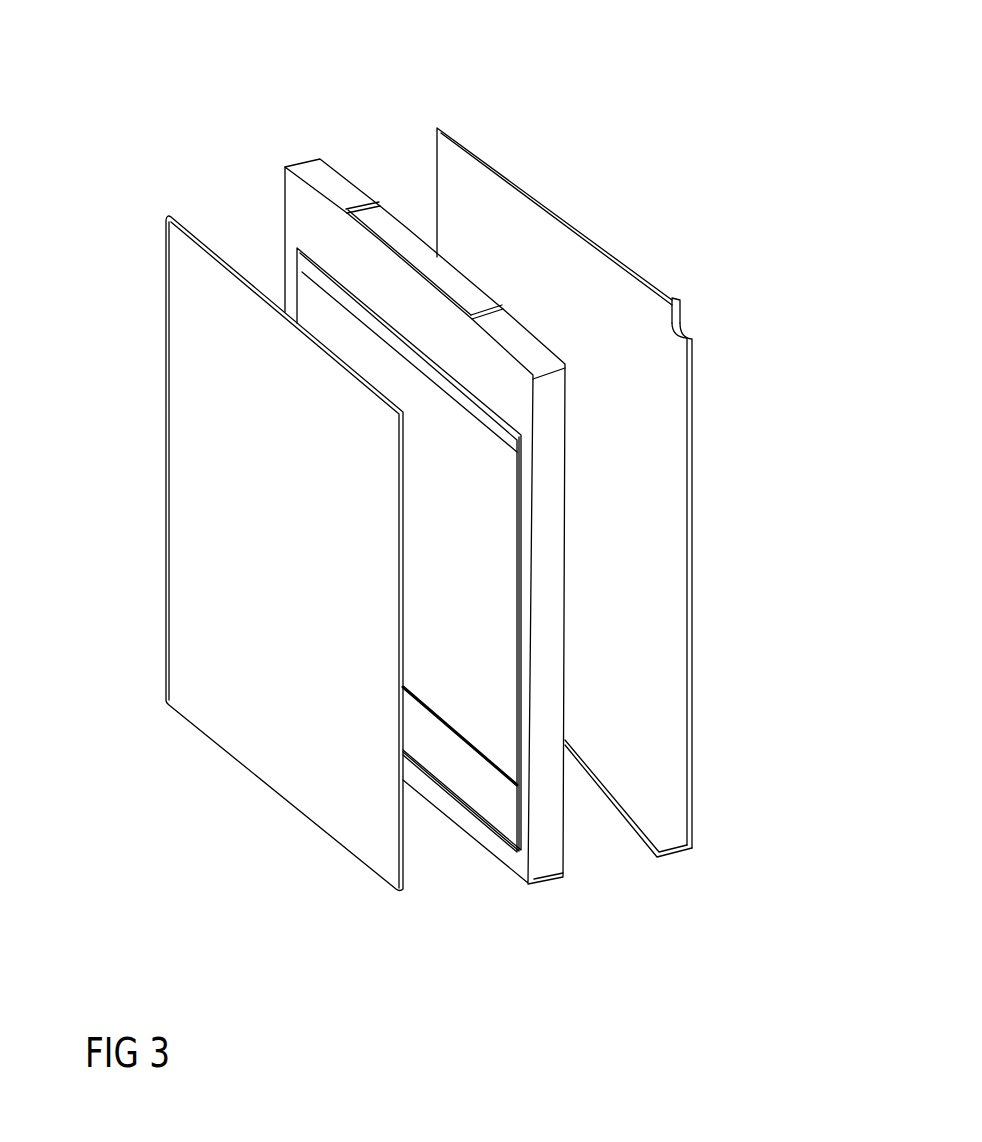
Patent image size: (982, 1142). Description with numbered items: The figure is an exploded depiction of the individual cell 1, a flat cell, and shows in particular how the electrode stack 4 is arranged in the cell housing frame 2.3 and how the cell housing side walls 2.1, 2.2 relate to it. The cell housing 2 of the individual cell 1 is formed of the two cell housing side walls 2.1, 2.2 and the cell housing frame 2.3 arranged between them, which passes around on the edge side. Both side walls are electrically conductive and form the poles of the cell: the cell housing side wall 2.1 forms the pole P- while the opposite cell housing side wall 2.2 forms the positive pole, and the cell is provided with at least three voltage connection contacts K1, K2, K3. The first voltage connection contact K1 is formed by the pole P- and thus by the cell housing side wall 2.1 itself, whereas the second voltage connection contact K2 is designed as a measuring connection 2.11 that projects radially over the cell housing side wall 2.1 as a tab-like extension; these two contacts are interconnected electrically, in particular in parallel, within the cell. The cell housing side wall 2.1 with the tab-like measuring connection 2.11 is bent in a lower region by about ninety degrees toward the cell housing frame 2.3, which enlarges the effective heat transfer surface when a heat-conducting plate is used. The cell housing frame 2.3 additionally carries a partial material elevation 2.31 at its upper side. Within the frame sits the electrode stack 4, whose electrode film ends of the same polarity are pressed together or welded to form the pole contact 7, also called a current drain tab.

The individual cell 1 is at (646, 47).
The cell housing 2 is at (181, 219).
The cell housing side wall 2.1 is at (663, 845).
The measuring connection 2.11 is at (684, 315).
The cell housing side wall 2.2 is at (387, 877).
The cell housing frame 2.3 is at (548, 868).
The partial material elevation 2.31 is at (416, 248).
The electrode stack 4 is at (490, 693).
The pole contact 7 is at (512, 830).
The first voltage connection contact K1 is at (693, 552).
The second voltage connection contact K2 is at (674, 298).
The third voltage connection contact K3 is at (290, 790).
The negative pole P- is at (665, 442).